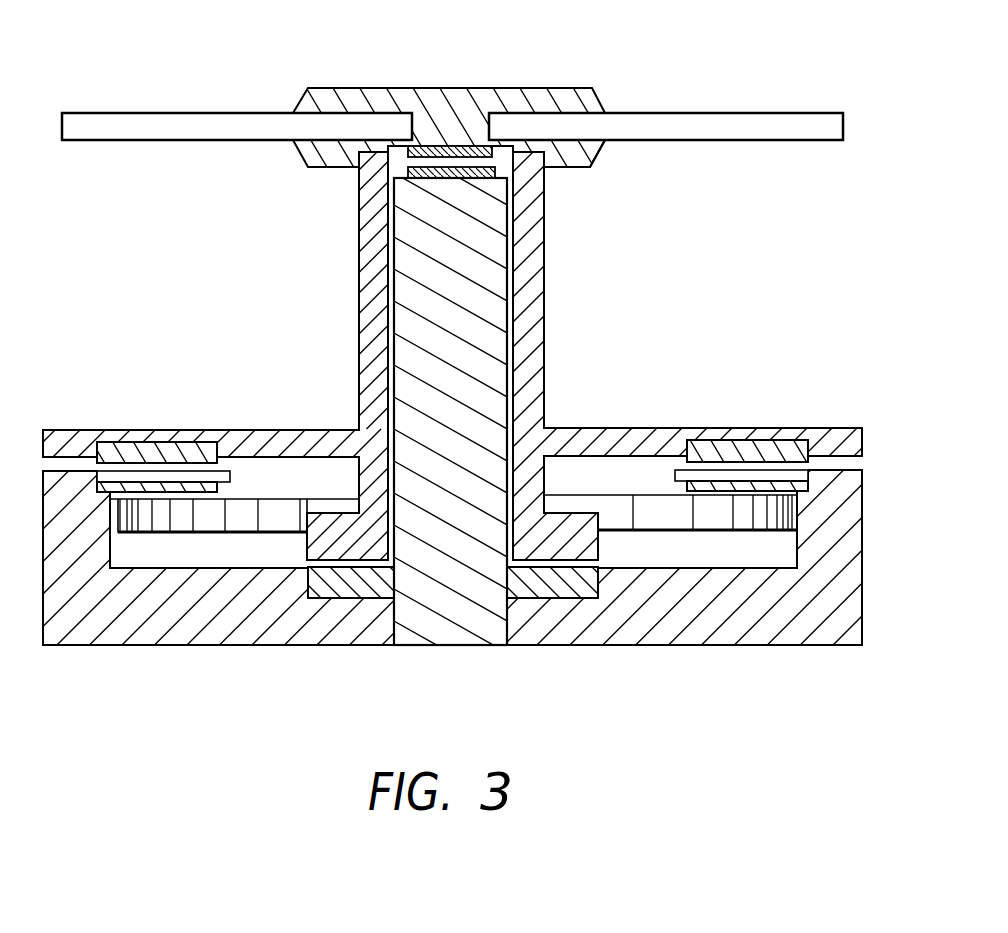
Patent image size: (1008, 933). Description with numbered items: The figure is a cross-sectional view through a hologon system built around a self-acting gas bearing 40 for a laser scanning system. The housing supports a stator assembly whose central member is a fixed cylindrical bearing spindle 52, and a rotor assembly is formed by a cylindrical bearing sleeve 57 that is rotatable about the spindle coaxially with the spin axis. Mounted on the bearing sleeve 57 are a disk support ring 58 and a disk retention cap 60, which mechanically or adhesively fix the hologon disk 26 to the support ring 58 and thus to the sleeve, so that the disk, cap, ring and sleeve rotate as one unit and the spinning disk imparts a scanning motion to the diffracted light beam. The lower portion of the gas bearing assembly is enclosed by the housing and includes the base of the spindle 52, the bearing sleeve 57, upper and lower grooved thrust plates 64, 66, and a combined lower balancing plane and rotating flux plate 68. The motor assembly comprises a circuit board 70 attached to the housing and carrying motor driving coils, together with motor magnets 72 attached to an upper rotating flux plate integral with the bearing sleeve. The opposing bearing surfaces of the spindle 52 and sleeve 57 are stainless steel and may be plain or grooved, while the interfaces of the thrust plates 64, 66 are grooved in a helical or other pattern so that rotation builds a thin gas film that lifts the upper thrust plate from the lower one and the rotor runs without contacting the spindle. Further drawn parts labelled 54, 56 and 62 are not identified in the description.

The hologon disk 26 is at (712, 112).
The self-acting gas bearing 40 is at (504, 431).
The bearing spindle 52 is at (507, 281).
The base 54 is at (146, 606).
The lower insulating strip 56 is at (461, 179).
The bearing sleeve 57 is at (543, 365).
The disk support ring 58 is at (597, 166).
The disk retention cap 60 is at (538, 94).
The upper insulating strip 62 is at (437, 150).
The upper grooved thrust plate 64 is at (343, 547).
The lower grooved thrust plate 66 is at (572, 600).
The combined lower balancing plane and rotating flux plate 68 is at (717, 517).
The circuit board 70 is at (815, 477).
The motor magnets 72 is at (152, 448).